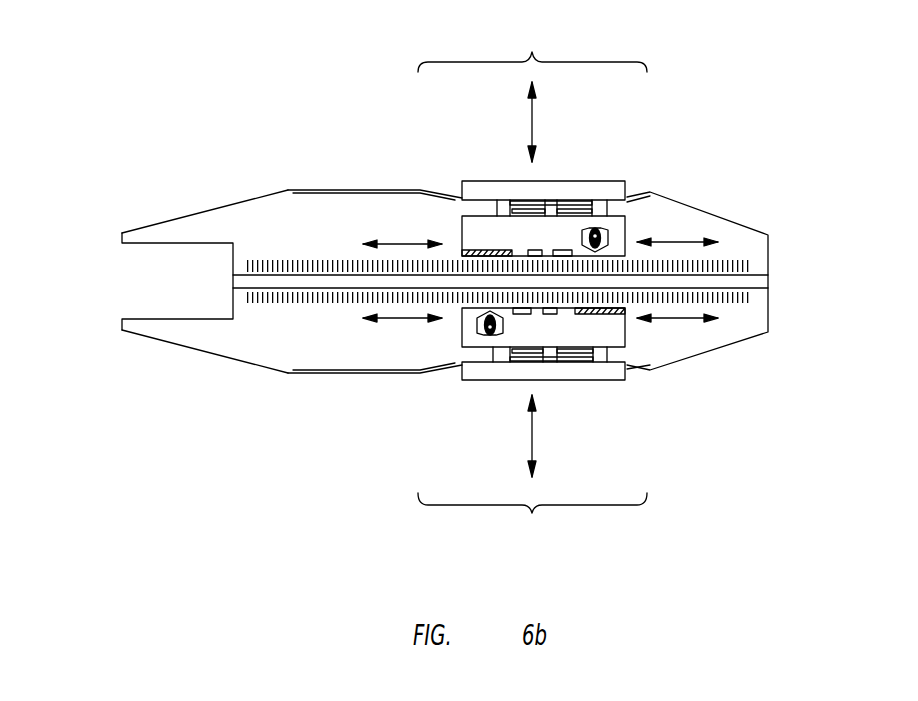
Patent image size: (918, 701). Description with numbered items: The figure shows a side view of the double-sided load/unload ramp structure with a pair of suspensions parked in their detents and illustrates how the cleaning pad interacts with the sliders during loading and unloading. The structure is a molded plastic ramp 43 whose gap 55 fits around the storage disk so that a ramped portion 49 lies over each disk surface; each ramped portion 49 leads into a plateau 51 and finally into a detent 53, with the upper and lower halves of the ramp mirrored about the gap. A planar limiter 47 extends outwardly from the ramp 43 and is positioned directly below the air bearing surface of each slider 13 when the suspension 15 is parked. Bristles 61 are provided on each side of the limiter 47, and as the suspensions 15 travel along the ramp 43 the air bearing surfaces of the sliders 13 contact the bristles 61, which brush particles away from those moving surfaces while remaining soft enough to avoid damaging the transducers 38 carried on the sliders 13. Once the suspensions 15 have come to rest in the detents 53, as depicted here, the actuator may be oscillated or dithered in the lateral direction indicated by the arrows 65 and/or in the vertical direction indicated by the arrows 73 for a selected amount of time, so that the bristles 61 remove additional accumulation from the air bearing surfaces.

The ramp 43 is at (786, 106).
The planar limiter 47 is at (727, 281).
The ramped portion 49 is at (205, 285).
The plateau 51 is at (375, 284).
The detent 53 is at (532, 285).
The gap 55 is at (151, 281).
The bristles 61 is at (500, 276).
The arrows 65 is at (540, 287).
The arrows 73 is at (514, 279).
The slider 13 is at (558, 275).
The suspension 15 is at (543, 276).
The transducer 38 is at (535, 279).